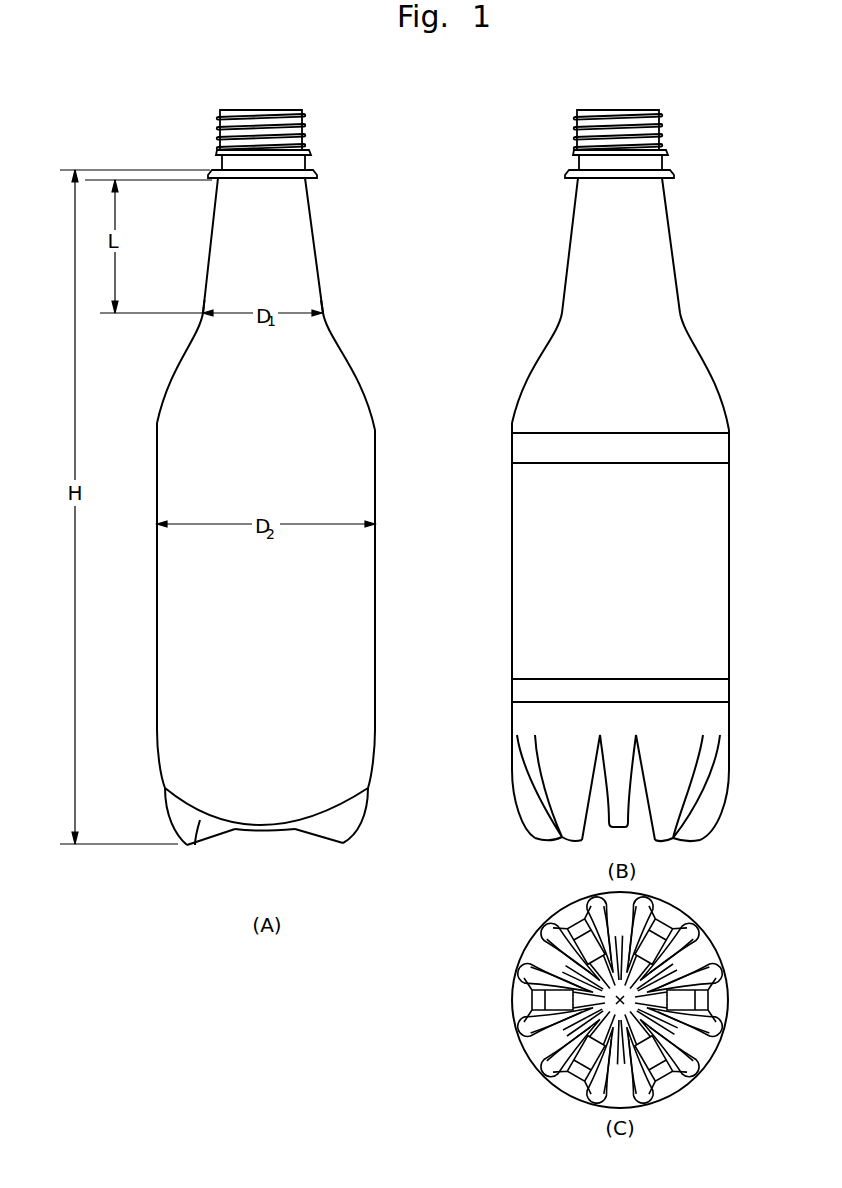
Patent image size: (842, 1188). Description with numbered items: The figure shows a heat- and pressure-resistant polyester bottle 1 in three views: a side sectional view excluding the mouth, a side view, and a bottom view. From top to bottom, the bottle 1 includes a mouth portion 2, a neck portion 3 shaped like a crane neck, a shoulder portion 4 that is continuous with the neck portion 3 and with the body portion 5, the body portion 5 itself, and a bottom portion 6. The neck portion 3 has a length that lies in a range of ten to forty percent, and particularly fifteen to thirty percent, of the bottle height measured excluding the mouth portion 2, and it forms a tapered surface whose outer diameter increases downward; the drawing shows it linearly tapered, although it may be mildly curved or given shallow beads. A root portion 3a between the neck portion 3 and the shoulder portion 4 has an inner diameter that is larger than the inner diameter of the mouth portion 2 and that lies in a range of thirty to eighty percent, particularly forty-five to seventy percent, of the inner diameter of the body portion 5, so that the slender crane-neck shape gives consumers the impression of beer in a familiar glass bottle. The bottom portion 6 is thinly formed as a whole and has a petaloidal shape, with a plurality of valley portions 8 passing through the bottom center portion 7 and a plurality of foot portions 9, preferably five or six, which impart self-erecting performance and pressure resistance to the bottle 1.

The heat- and pressure-resistant polyester bottle 1 is at (473, 610).
The mouth portion 2 is at (305, 142).
The neck portion 3 is at (318, 248).
The root portion 3a is at (326, 312).
The shoulder portion 4 is at (350, 356).
The body portion 5 is at (375, 581).
The bottom portion 6 is at (368, 808).
The bottom center portion 7 is at (262, 832).
The valley portions 8 is at (200, 822).
The leg portion 9 is at (188, 844).